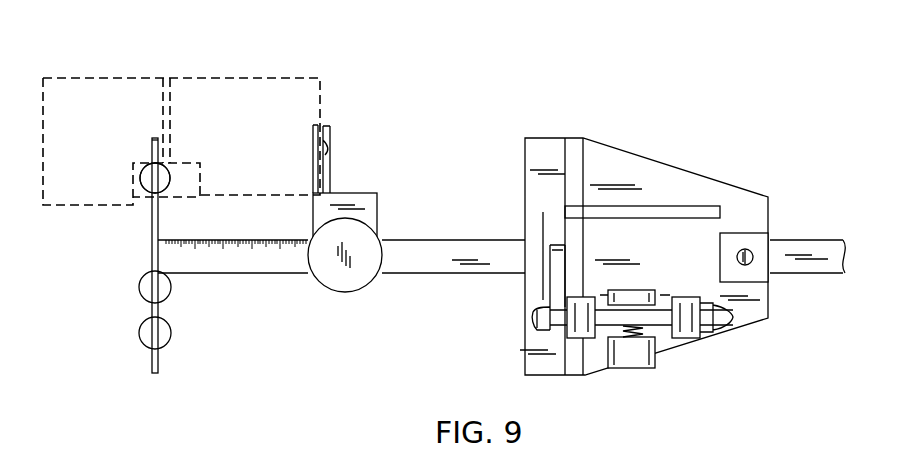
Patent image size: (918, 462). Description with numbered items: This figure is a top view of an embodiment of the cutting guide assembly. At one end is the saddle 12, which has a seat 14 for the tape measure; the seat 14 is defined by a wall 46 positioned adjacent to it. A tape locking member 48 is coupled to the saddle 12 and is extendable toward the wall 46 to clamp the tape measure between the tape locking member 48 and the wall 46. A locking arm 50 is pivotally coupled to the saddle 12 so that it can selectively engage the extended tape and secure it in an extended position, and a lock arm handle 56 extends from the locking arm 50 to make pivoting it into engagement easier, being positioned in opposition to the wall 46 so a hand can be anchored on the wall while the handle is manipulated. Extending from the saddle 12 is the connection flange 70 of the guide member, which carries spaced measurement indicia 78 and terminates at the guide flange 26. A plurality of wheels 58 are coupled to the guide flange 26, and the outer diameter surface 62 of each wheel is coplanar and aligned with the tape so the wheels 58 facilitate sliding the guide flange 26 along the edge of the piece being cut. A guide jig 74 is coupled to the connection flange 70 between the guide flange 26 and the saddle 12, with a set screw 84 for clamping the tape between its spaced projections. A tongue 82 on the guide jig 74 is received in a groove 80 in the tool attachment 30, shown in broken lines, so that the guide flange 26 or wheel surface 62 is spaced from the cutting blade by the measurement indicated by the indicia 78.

The saddle 12 is at (688, 183).
The seat 14 is at (682, 248).
The guide flange 26 is at (160, 152).
The tool attachment 30 is at (245, 92).
The wall 46 is at (642, 208).
The tape locking member 48 is at (632, 362).
The locking arm 50 is at (557, 288).
The lock arm handle 56 is at (665, 324).
The wheels 58 is at (172, 179).
The outer diameter surface 62 is at (141, 168).
The connection flange 70 is at (482, 255).
The guide jig 74 is at (358, 190).
The measurement indicia 78 is at (235, 274).
The groove 80 is at (325, 137).
The tongue 82 is at (332, 140).
The set screw 84 is at (347, 275).